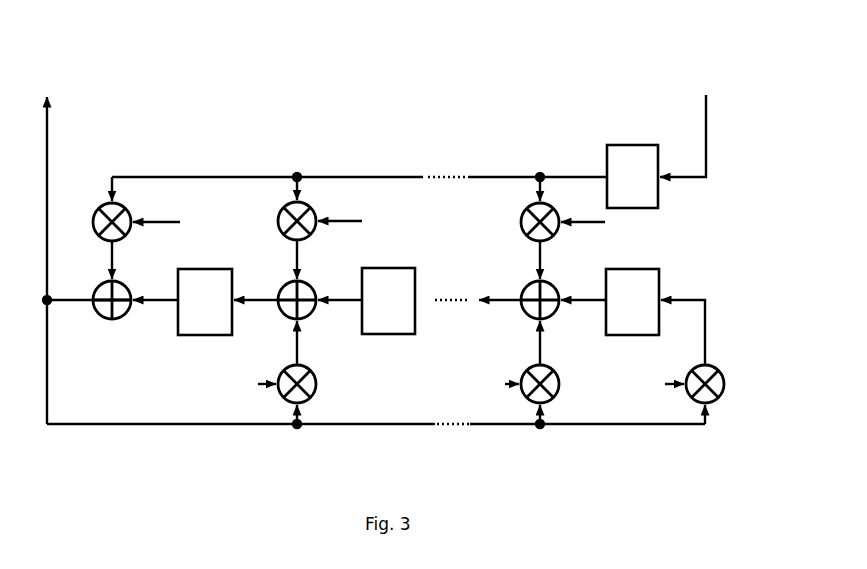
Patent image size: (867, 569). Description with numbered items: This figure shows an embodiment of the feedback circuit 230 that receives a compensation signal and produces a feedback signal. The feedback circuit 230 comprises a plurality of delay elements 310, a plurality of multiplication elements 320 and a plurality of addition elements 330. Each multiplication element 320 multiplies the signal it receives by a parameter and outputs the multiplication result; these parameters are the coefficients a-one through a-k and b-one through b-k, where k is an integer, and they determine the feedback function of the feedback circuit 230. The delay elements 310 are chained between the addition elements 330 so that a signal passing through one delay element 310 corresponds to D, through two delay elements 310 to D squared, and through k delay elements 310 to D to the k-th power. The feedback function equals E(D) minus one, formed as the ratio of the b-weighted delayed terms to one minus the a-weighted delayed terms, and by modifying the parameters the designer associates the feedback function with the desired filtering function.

The feedback circuit 230 is at (63, 482).
The delay element 310 is at (426, 209).
The multiplication element 320 is at (408, 305).
The addition element 330 is at (322, 325).